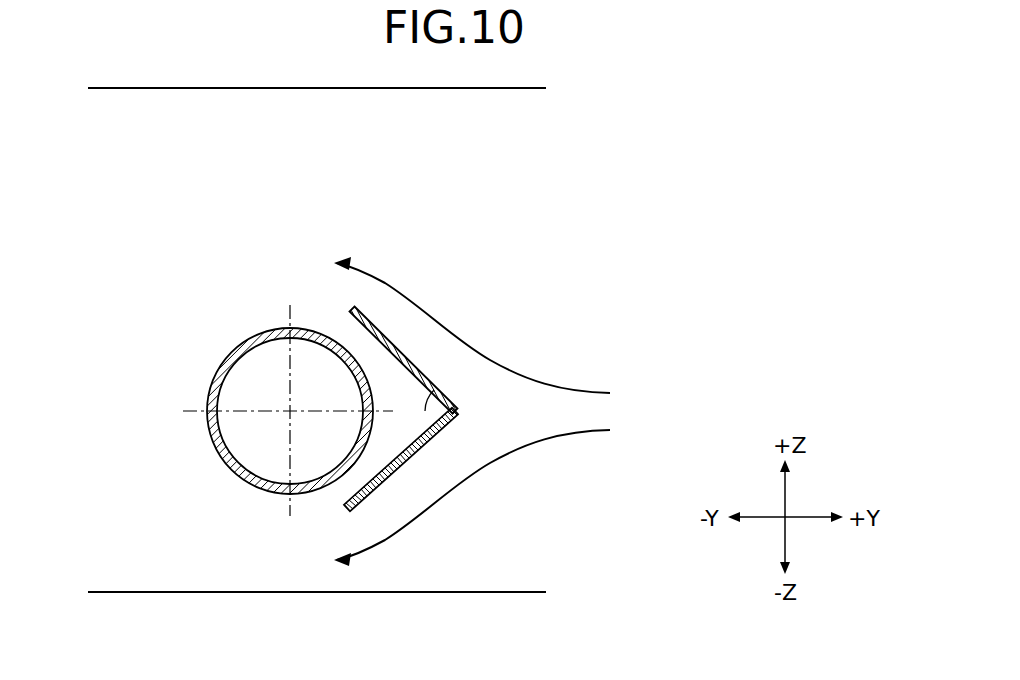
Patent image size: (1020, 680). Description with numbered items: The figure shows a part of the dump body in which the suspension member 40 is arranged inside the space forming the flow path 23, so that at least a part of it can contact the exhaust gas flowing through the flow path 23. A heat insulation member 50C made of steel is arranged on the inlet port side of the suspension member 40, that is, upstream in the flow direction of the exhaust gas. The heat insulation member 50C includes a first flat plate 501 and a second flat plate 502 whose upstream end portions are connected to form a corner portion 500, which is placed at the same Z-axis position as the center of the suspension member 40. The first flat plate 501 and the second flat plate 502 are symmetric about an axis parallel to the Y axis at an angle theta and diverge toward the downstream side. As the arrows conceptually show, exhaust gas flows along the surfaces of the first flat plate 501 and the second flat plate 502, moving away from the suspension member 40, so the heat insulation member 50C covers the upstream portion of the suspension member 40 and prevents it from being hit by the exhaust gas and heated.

The flow path 23 is at (293, 225).
The suspension member 40 is at (263, 330).
The heat insulation member 50C is at (443, 392).
The corner portion 500 is at (464, 406).
The first flat plate 501 is at (413, 367).
The second flat plate 502 is at (413, 450).